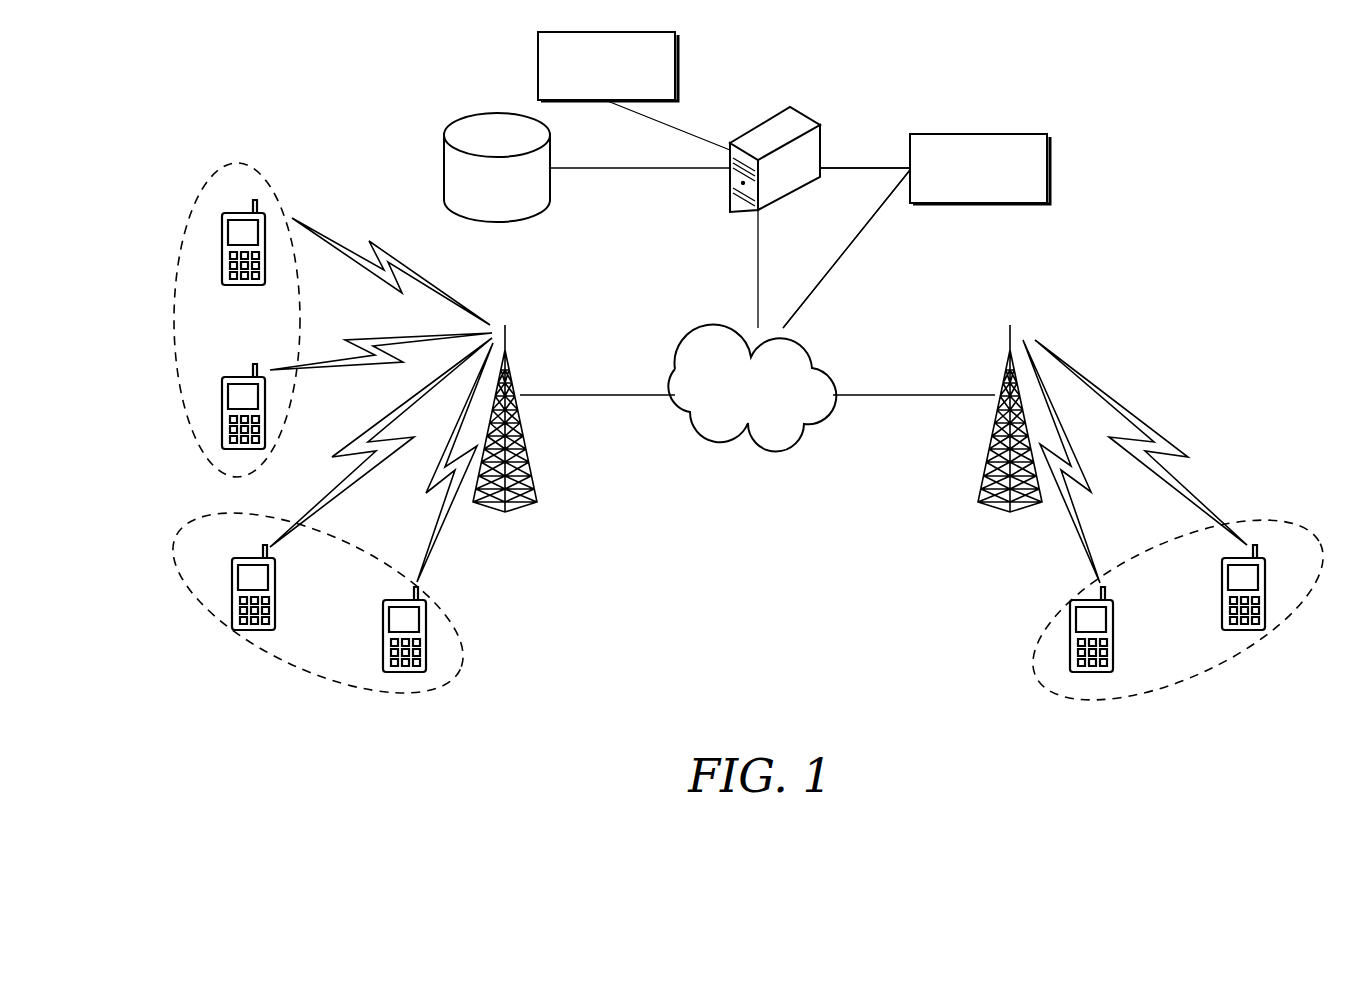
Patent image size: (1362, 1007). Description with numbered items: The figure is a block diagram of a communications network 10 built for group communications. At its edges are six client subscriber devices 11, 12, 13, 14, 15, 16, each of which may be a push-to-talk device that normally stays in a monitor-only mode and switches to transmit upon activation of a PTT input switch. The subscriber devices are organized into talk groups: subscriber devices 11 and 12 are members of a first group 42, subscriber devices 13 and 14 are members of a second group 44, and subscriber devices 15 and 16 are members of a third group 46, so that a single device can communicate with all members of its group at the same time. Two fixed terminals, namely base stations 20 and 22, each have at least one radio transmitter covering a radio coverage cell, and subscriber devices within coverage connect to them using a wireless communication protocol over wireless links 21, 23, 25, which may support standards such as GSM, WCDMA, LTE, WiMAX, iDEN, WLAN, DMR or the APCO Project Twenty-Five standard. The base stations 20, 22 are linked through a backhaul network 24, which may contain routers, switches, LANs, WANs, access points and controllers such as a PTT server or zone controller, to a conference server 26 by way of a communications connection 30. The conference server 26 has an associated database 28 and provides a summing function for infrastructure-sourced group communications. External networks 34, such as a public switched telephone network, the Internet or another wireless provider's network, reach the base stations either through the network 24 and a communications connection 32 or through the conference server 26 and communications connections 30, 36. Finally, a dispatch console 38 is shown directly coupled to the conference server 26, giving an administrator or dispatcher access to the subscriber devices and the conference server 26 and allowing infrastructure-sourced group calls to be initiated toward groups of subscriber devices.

The communications network 10 is at (1318, 746).
The client subscriber device 11 is at (240, 212).
The client subscriber device 12 is at (240, 376).
The client subscriber device 13 is at (250, 557).
The client subscriber device 14 is at (402, 599).
The client subscriber device 15 is at (1113, 635).
The client subscriber device 16 is at (1265, 593).
The fixed terminal 20 is at (508, 350).
The wireless link 21 is at (444, 535).
The fixed terminal 22 is at (1004, 358).
The wireless link 23 is at (1066, 540).
The backhaul network 24 is at (733, 450).
The wireless link 25 is at (322, 223).
The conference server 26 is at (815, 116).
The database 28 is at (455, 118).
The communications connection 30 is at (758, 271).
The communications connection 32 is at (845, 246).
The external networks 34 is at (1036, 134).
The communications connection 36 is at (866, 167).
The dispatch console 38 is at (660, 32).
The first group G_A 42 is at (247, 170).
The second group G_B 44 is at (462, 655).
The third group G_C 46 is at (1306, 527).